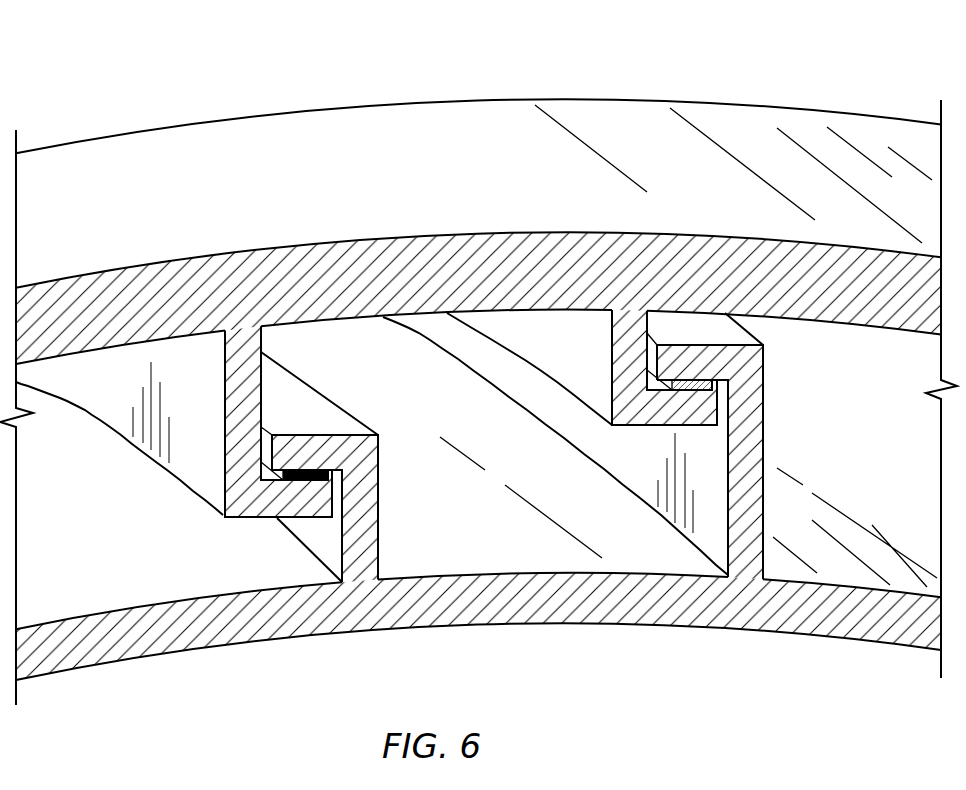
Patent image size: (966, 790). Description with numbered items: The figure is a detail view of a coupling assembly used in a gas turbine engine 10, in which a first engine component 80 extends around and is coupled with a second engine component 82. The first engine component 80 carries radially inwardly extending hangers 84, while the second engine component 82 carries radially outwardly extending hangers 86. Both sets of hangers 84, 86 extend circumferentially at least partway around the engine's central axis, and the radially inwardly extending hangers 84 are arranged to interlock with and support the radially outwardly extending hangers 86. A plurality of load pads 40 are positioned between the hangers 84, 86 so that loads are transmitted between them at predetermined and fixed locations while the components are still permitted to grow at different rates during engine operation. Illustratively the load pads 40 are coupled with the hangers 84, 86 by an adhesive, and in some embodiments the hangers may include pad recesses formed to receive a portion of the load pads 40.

The engine 10 is at (860, 63).
The first engine component 80 is at (440, 218).
The second engine component 82 is at (524, 637).
The radially inwardly extending hangers 84 is at (262, 518).
The radially outwardly extending hangers 86 is at (322, 435).
The load pads 40 is at (330, 477).